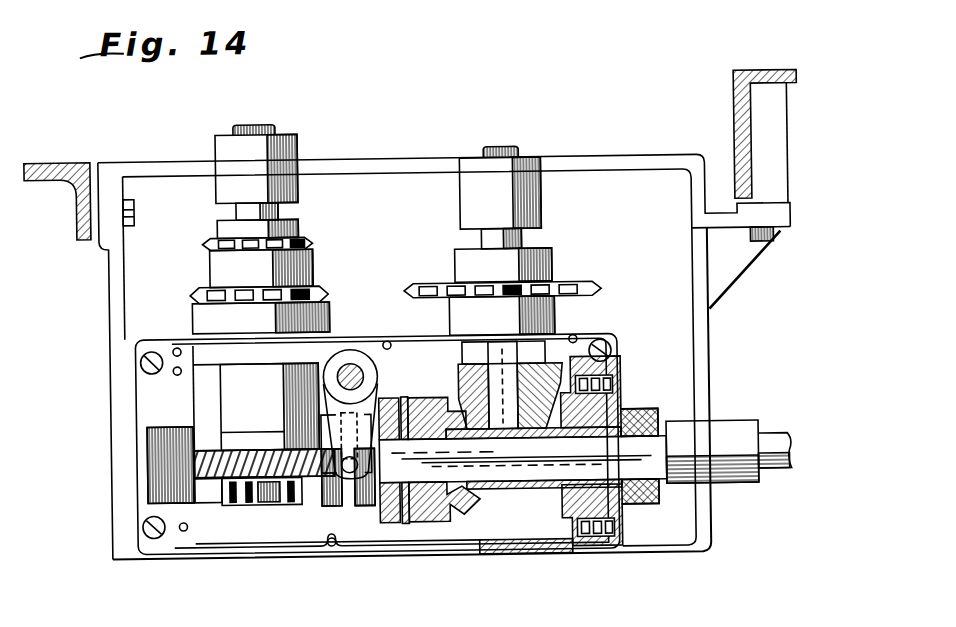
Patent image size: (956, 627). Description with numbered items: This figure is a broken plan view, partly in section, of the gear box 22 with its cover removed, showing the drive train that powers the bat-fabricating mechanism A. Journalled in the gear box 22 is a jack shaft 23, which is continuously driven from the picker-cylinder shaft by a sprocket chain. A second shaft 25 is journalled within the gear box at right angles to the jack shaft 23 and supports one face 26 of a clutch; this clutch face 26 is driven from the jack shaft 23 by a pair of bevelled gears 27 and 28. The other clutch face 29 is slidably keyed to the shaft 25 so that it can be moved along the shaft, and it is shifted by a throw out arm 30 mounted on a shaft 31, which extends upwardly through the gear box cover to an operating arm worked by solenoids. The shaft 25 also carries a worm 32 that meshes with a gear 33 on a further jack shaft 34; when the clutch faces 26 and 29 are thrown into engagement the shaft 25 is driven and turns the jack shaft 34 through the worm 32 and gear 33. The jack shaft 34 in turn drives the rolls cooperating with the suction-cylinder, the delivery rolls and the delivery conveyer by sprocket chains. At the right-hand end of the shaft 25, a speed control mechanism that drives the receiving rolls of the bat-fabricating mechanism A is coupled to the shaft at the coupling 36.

The bat-fabricating mechanism A is at (50, 158).
The gear box 22 is at (375, 165).
The jack shaft 23 is at (524, 239).
The shaft 25 is at (511, 467).
The clutch face 26 is at (413, 523).
The bevelled gear 27 is at (466, 394).
The bevelled gear 28 is at (455, 504).
The clutch face 29 is at (378, 520).
The throw out arm 30 is at (362, 392).
The shaft 31 is at (362, 352).
The worm 32 is at (221, 494).
The gear 33 is at (204, 445).
The jack shaft 34 is at (282, 211).
The coupling 36 is at (725, 435).